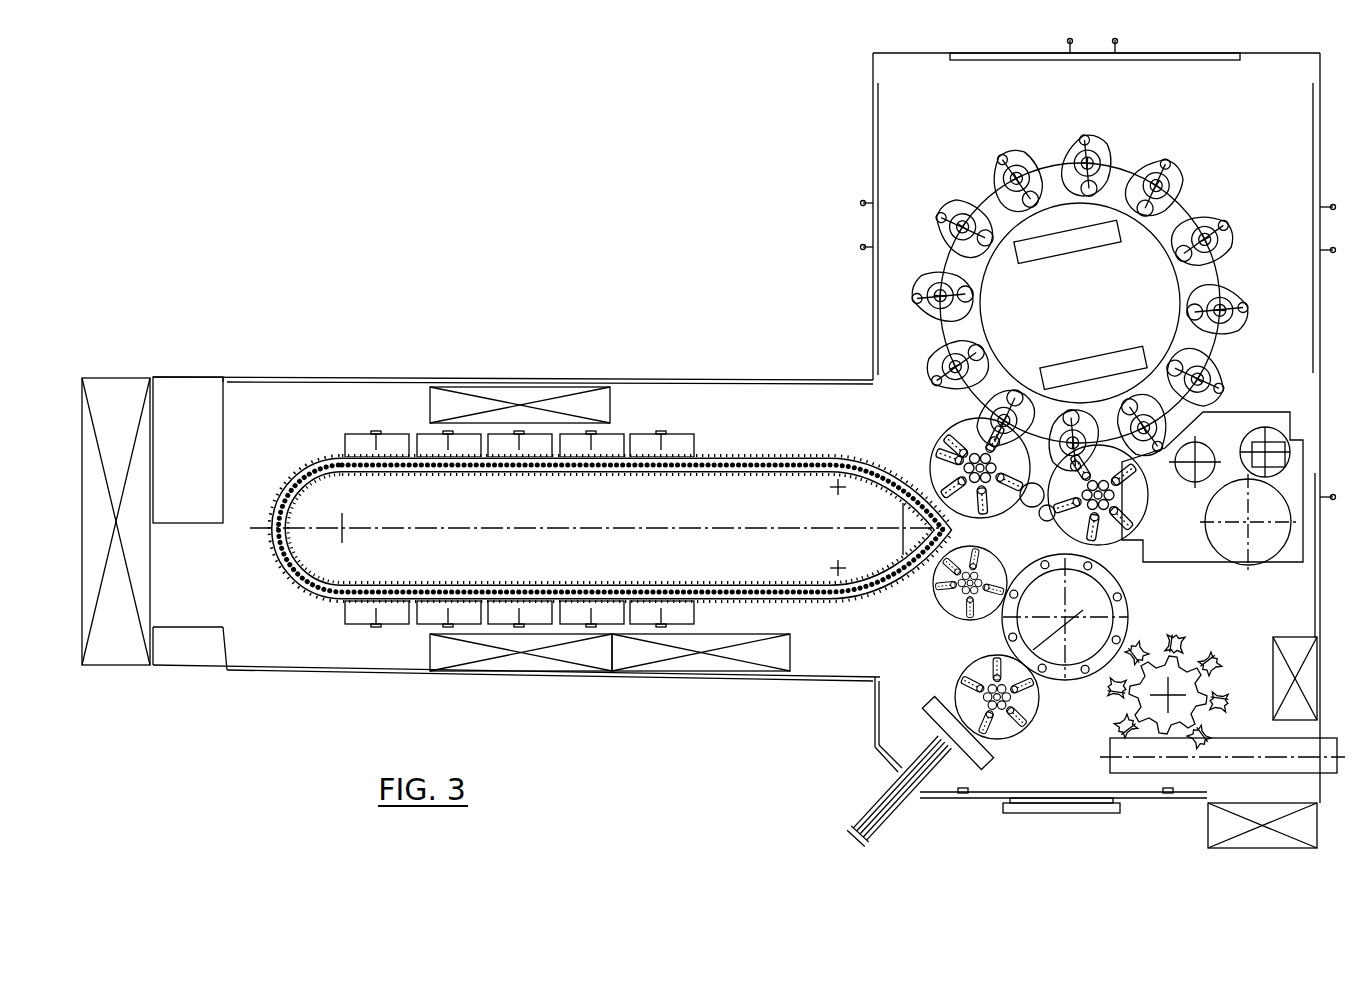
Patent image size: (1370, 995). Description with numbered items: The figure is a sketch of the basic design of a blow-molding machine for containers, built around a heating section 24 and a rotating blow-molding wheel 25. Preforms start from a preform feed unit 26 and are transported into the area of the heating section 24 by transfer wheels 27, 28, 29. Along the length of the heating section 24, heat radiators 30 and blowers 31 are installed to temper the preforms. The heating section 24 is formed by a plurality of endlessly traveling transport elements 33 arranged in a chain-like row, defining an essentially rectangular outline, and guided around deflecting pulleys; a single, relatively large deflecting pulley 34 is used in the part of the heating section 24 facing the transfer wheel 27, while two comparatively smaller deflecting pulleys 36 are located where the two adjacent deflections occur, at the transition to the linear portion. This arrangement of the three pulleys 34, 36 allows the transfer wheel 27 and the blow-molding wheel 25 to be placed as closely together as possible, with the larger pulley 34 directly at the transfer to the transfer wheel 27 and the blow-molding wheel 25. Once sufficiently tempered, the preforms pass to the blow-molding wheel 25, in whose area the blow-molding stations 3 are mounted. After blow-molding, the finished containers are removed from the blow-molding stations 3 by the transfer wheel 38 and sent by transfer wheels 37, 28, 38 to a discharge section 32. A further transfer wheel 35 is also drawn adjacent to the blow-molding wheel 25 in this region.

The blow-molding station 3 is at (923, 282).
The heating section 24 is at (653, 415).
The blow-molding wheel 25 is at (996, 292).
The preform feed unit 26 is at (907, 793).
The transfer wheel 27 is at (1010, 737).
The transfer wheel 28 is at (1067, 680).
The transfer wheel 29 is at (945, 608).
The heat radiator 30 is at (395, 440).
The blower 31 is at (513, 393).
The discharge section 32 is at (1327, 768).
The transport element 33 is at (310, 590).
The deflecting pulley 34 is at (342, 526).
The transfer wheel 35 is at (943, 413).
The deflecting pulley 36 is at (838, 487).
The transfer wheel 37 is at (1130, 537).
The transfer wheel 38 is at (1178, 708).